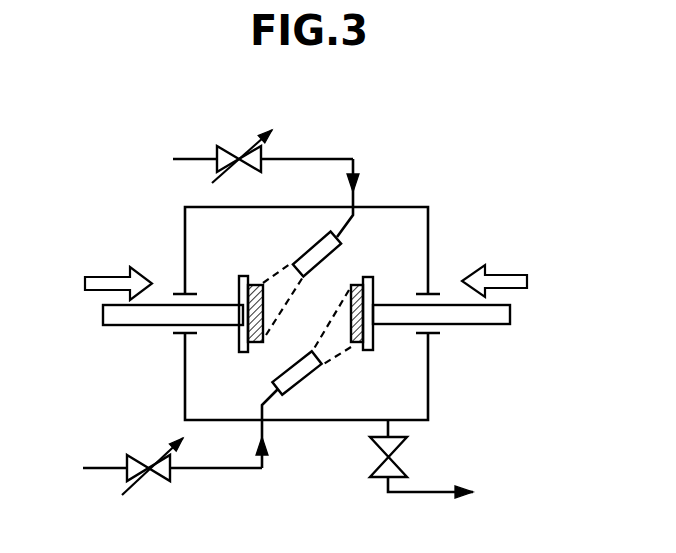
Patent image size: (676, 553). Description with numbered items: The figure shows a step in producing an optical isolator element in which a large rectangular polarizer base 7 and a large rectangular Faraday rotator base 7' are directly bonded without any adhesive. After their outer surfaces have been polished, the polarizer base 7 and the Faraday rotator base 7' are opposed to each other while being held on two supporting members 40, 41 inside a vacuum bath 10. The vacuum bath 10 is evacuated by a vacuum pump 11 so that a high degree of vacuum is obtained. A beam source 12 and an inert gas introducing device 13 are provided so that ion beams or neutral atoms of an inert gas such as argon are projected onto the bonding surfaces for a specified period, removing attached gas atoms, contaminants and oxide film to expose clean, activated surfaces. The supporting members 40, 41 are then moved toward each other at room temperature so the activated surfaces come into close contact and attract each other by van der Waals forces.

The polarizer base 7 is at (175, 331).
The Faraday rotator base 7' is at (436, 286).
The vacuum bath 10 is at (430, 347).
The vacuum pump 11 is at (382, 452).
The beam source 12 is at (305, 250).
The inert gas introducing device 13 is at (223, 147).
The supporting member 40 is at (240, 287).
The supporting member 41 is at (365, 278).